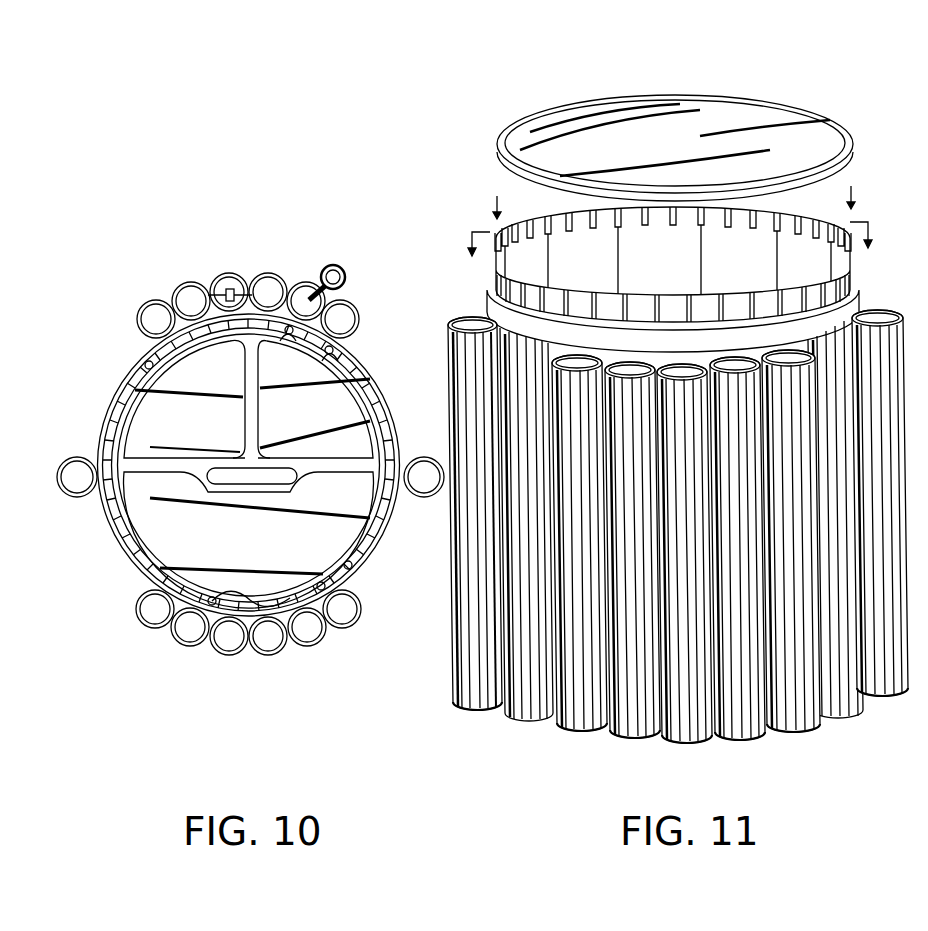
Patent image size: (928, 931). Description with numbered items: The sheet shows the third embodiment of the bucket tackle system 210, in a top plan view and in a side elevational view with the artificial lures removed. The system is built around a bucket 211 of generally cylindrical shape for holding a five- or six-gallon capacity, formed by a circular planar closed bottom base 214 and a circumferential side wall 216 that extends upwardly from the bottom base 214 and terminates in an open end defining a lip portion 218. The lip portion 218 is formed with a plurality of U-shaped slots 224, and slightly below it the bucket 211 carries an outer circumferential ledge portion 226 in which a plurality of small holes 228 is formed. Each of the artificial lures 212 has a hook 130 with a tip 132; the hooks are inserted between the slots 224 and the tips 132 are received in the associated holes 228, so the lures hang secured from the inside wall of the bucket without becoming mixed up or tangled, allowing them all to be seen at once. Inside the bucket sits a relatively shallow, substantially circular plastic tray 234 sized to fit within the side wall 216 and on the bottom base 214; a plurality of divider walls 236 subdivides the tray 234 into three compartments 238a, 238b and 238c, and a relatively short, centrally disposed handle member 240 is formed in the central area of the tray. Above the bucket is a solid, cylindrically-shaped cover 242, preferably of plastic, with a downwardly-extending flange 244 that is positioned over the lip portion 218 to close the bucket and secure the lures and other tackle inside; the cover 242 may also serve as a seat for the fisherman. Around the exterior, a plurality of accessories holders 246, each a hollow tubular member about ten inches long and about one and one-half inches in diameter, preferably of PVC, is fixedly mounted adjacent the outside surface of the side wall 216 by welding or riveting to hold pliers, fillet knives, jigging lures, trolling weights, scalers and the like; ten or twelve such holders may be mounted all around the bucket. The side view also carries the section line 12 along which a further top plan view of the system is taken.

In FIG. 11, the section line 12— 12 is at (671, 221).
In FIG. 10, the hook 130 is at (252, 292).
In FIG. 10, the tip 132 is at (277, 307).
In FIG. 11, the bucket tackle system 210 is at (657, 424).
In FIG. 11, the bucket 211 is at (508, 628).
In FIG. 10, the artificial lures 212 is at (340, 355).
In FIG. 11, the bottom base 214 is at (520, 713).
In FIG. 11, the side wall 216 is at (510, 534).
In FIG. 11, the lip portion 218 is at (843, 232).
In FIG. 10, the U-shaped slots 224 is at (130, 377).
In FIG. 11, the U-shaped slots 224 is at (562, 222).
In FIG. 11, the ledge portion 226 is at (500, 290).
In FIG. 10, the small holes 228 is at (110, 407).
In FIG. 11, the small holes 228 is at (840, 322).
In FIG. 10, the tray 234 is at (150, 367).
In FIG. 10, the divider walls 236 is at (243, 390).
In FIG. 10, the compartment 238a is at (270, 544).
In FIG. 10, the compartment 238b is at (207, 418).
In FIG. 10, the compartment 238c is at (322, 418).
In FIG. 10, the handle member 240 is at (227, 484).
In FIG. 11, the cover 242 is at (828, 116).
In FIG. 11, the flange 244 is at (497, 152).
In FIG. 10, the accessories holders 246 is at (180, 290).
In FIG. 11, the accessories holders 246 is at (557, 410).